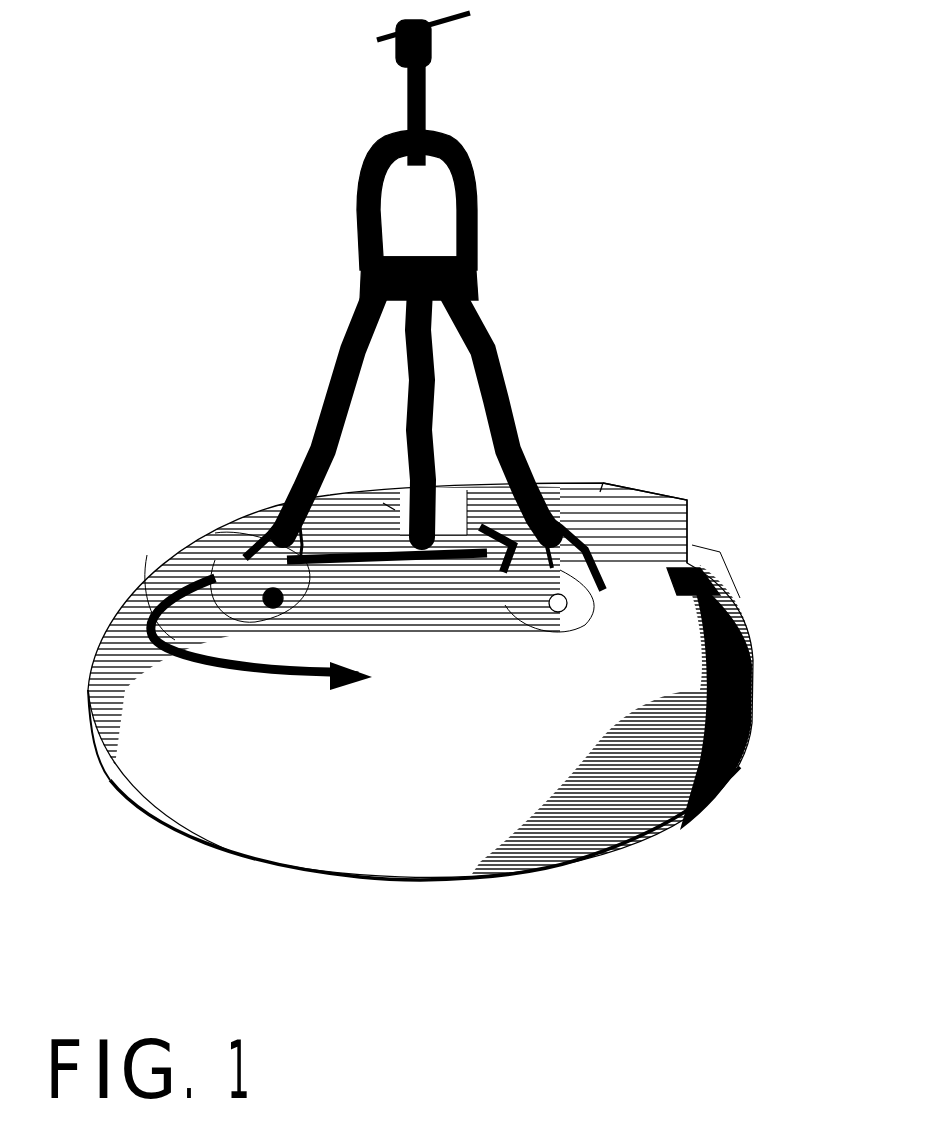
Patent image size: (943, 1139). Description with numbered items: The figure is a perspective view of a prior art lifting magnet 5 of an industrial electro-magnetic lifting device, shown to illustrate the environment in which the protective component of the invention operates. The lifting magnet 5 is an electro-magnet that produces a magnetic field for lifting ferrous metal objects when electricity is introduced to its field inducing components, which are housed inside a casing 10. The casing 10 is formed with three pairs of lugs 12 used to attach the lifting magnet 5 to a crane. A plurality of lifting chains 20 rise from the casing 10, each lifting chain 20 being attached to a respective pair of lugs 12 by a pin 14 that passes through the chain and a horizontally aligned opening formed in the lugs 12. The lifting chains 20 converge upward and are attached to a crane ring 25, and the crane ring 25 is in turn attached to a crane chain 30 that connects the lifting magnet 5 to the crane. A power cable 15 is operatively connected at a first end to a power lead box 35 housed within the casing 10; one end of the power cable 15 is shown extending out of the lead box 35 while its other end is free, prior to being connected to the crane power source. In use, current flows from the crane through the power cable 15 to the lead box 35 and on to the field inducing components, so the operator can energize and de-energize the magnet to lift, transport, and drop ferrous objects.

The lifting magnet 5 is at (90, 235).
The casing 10 is at (252, 517).
The lugs 12 is at (215, 533).
The pin 14 is at (187, 552).
The power cable 15 is at (148, 553).
The lifting chains 20 is at (340, 347).
The crane ring 25 is at (477, 177).
The crane chain 30 is at (403, 88).
The power lead box 35 is at (620, 483).